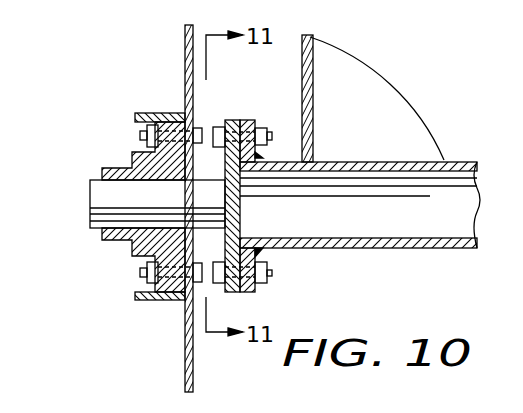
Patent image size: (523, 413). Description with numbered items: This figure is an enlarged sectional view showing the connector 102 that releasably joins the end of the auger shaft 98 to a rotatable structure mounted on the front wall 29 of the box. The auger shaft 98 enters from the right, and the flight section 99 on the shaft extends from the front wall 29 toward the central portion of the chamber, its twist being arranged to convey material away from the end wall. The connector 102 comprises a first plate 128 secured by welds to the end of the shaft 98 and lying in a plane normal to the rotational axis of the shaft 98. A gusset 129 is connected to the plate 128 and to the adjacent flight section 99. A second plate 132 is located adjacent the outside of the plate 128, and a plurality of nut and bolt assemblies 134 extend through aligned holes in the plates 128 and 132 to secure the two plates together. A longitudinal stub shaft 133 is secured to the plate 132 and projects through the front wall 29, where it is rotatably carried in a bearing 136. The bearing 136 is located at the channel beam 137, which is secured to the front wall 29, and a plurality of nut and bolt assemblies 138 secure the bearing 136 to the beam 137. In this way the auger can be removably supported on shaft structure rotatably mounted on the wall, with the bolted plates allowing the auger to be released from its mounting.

The front wall 29 is at (185, 52).
The longitudinal shaft 98 is at (413, 158).
The flight section 99 is at (370, 78).
The connector 102 is at (367, 263).
The first plate 128 is at (255, 292).
The gusset 129 is at (255, 122).
The second plate 132 is at (237, 120).
The stub shaft 133 is at (107, 212).
The nut and bolt assemblies 134 is at (272, 273).
The bearing 136 is at (115, 168).
The channel beam 137 is at (148, 112).
The nut and bolt assemblies 138 is at (140, 137).